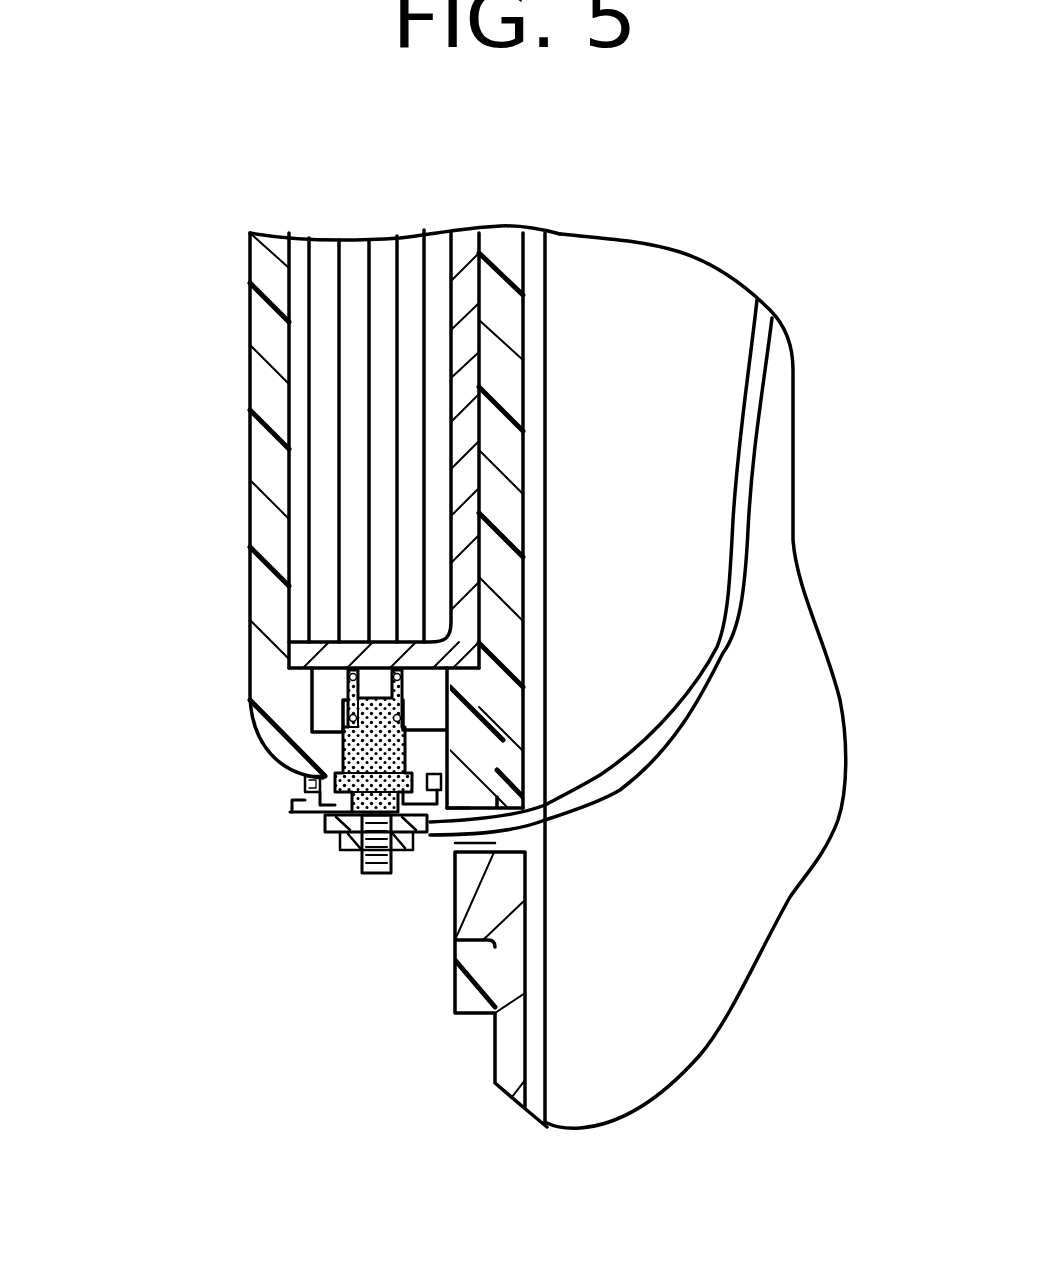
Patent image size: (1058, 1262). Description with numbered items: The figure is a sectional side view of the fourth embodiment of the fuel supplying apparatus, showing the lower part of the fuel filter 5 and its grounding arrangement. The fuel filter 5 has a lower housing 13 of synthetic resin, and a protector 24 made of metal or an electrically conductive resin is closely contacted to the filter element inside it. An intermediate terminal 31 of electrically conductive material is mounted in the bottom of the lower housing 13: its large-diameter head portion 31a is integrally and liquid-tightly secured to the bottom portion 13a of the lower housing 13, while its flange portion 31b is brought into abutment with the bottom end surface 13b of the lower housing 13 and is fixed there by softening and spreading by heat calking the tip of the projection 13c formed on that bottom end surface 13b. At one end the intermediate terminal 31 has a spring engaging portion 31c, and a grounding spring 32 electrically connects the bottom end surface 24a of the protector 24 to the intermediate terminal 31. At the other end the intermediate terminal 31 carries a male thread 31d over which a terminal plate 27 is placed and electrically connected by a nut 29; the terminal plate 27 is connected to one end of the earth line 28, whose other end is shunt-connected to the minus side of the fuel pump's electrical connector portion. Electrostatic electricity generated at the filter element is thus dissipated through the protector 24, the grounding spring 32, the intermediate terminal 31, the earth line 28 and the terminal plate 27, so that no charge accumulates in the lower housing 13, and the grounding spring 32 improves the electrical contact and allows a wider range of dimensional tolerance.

The fuel filter 5 is at (243, 272).
The lower housing 13 is at (265, 460).
The bottom portion of the lower housing 13a is at (462, 765).
The bottom end surface of the lower housing 13b is at (303, 780).
The projection 13c is at (300, 815).
The protector 24 is at (450, 413).
The bottom end surface of the protector 24a is at (323, 683).
The terminal plate 27 is at (345, 825).
The earth line 28 is at (705, 703).
The nut 29 is at (350, 842).
The intermediate terminal 31 is at (357, 873).
The head portion 31a is at (338, 748).
The flange portion 31b is at (320, 800).
The spring engaging portion 31c is at (340, 702).
The male thread 31d is at (398, 857).
The grounding spring 32 is at (455, 700).